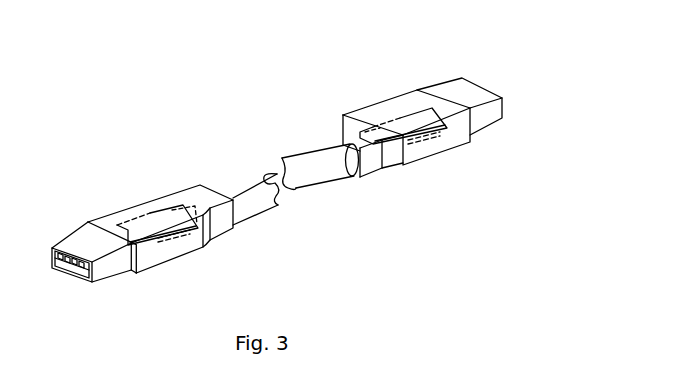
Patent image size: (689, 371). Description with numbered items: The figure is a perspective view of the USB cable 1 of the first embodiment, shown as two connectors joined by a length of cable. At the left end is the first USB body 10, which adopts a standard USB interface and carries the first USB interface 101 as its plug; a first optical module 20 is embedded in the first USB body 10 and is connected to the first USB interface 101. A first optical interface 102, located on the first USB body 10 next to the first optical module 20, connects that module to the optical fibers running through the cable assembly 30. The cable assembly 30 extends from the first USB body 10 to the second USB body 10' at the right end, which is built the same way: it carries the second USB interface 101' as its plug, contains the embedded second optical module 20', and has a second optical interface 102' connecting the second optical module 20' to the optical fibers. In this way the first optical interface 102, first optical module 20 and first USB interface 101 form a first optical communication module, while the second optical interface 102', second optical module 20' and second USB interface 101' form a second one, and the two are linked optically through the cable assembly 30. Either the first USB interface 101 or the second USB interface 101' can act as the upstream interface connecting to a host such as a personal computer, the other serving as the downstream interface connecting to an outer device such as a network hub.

The USB cable 1 is at (68, 41).
The first USB interface 101 is at (88, 232).
The first USB body 10 is at (158, 223).
The first optical module 20 is at (155, 201).
The first optical interface 102 is at (169, 196).
The cable assembly 30 is at (297, 165).
The second USB interface 101' is at (459, 87).
The second USB body 10' is at (406, 114).
The second optical module 20' is at (401, 103).
The second optical interface 102' is at (375, 114).